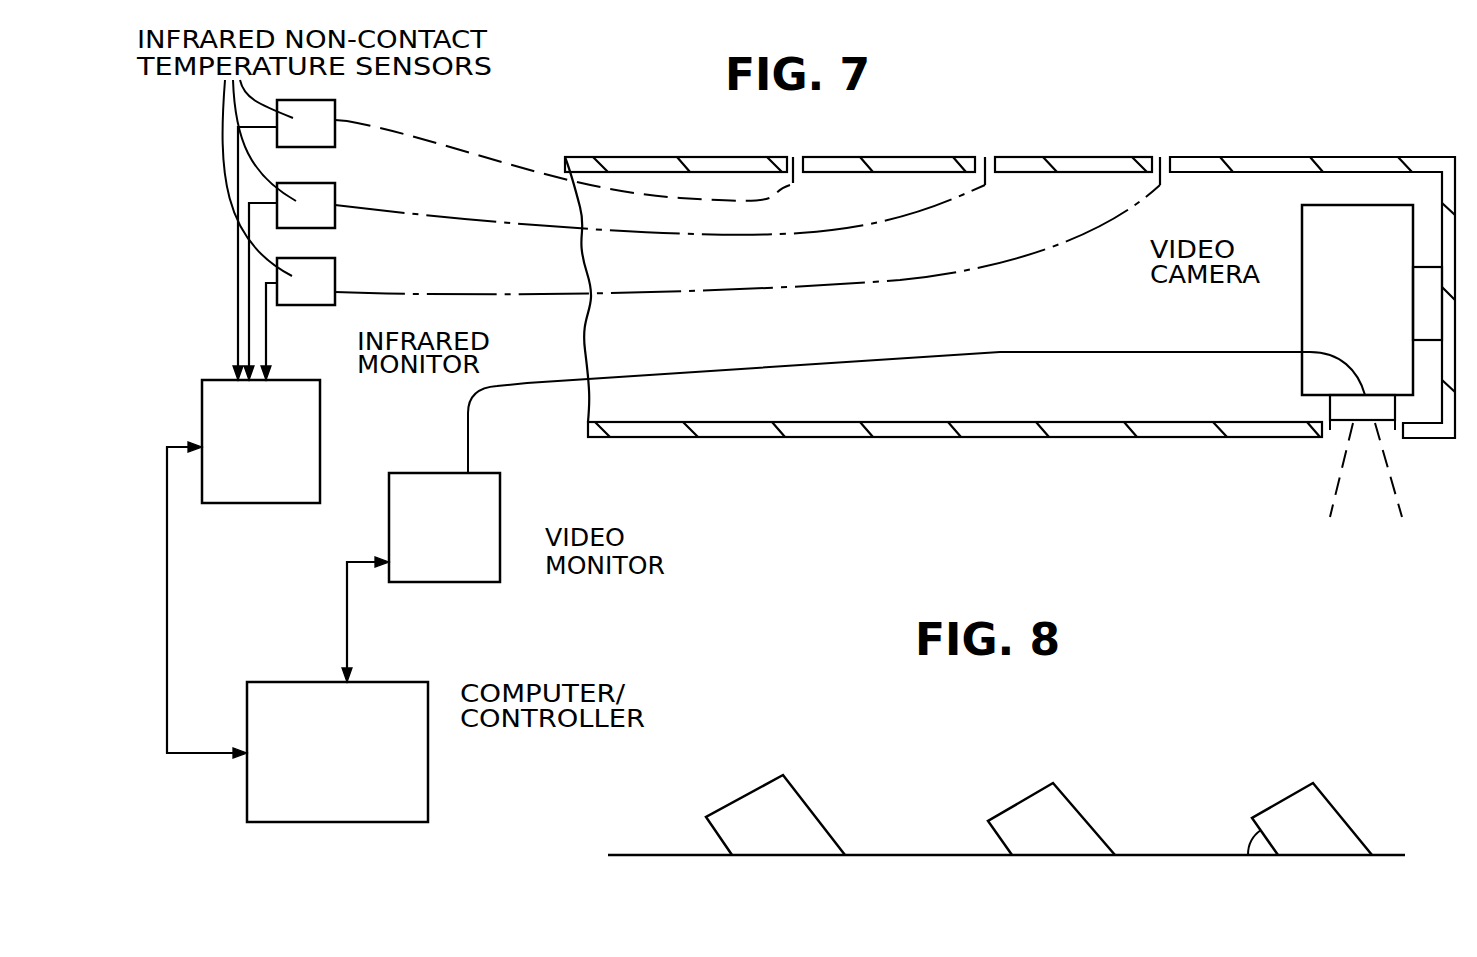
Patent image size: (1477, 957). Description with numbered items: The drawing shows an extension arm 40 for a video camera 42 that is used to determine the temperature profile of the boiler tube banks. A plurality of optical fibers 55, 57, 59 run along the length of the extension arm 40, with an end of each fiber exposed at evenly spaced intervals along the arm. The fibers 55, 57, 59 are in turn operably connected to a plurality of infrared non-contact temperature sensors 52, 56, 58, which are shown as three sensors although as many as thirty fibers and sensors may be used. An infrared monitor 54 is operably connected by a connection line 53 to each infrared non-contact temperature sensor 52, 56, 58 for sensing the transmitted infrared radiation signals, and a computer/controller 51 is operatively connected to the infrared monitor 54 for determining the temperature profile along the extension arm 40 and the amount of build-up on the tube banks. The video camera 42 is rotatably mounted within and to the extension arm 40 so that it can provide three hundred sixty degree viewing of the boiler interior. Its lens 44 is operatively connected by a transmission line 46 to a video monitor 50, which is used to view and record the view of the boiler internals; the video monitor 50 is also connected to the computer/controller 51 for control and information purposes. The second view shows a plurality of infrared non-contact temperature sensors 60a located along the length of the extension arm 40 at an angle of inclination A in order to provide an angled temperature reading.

In FIG. 7, the infrared non-contact temperature sensor 52 is at (323, 117).
In FIG. 7, the infrared non-contact temperature sensor 56 is at (313, 207).
In FIG. 7, the infrared non-contact temperature sensor 58 is at (312, 283).
In FIG. 7, the connection line 53 is at (235, 270).
In FIG. 7, the infrared monitor 54 is at (303, 433).
In FIG. 7, the video monitor 50 is at (485, 532).
In FIG. 7, the computer/controller 51 is at (408, 768).
In FIG. 7, the optical fiber 55 is at (723, 197).
In FIG. 7, the optical fiber 57 is at (787, 235).
In FIG. 7, the optical fiber 59 is at (973, 272).
In FIG. 7, the transmission line 46 is at (957, 360).
In FIG. 7, the video camera 42 is at (1333, 300).
In FIG. 7, the lens 44 is at (1345, 412).
In FIG. 7, the extension arm 40 is at (930, 430).
In FIG. 8, the extension arm 40 is at (663, 853).
In FIG. 8, the infrared non-contact temperature sensors 60a is at (1282, 810).
In FIG. 8, the angle of inclination A is at (1263, 844).